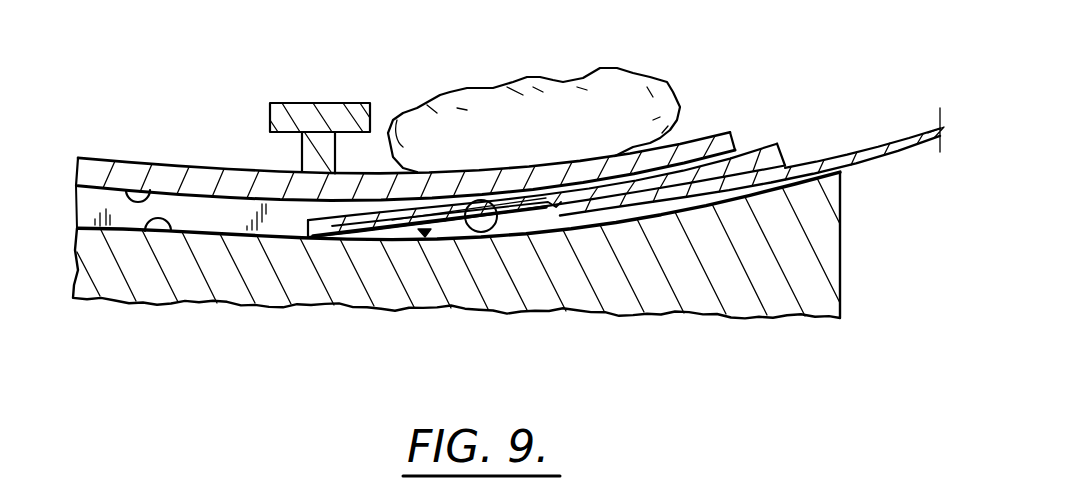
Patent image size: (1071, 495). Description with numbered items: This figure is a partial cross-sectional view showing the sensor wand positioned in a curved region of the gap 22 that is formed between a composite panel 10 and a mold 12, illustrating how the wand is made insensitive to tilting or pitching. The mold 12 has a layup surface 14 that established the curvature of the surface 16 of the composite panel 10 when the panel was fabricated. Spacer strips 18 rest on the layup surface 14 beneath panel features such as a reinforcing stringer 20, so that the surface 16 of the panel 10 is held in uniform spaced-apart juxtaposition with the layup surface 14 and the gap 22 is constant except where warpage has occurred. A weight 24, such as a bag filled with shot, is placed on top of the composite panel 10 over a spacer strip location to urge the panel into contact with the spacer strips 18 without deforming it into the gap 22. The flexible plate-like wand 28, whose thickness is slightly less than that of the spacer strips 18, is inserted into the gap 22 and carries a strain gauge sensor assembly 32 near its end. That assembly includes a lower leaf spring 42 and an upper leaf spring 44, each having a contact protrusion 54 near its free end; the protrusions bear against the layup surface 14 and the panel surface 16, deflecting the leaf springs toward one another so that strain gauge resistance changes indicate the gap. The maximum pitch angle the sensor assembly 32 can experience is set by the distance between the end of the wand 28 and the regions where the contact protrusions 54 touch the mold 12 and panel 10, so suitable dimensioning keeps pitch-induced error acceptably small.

The composite panel 10 is at (707, 147).
The mold 12 is at (803, 287).
The layup surface 14 is at (146, 236).
The surface of composite panel 16 is at (138, 189).
The spacer strips 18 is at (784, 156).
The reinforcing stringer 20 is at (338, 102).
The gap 22 is at (214, 213).
The weights 24 is at (620, 83).
The wand 28 is at (833, 155).
The strain gauge sensor assembly 32 is at (423, 236).
The lower leaf spring 42 is at (540, 226).
The upper leaf spring 44 is at (548, 202).
The contact protrusion 54 is at (481, 198).